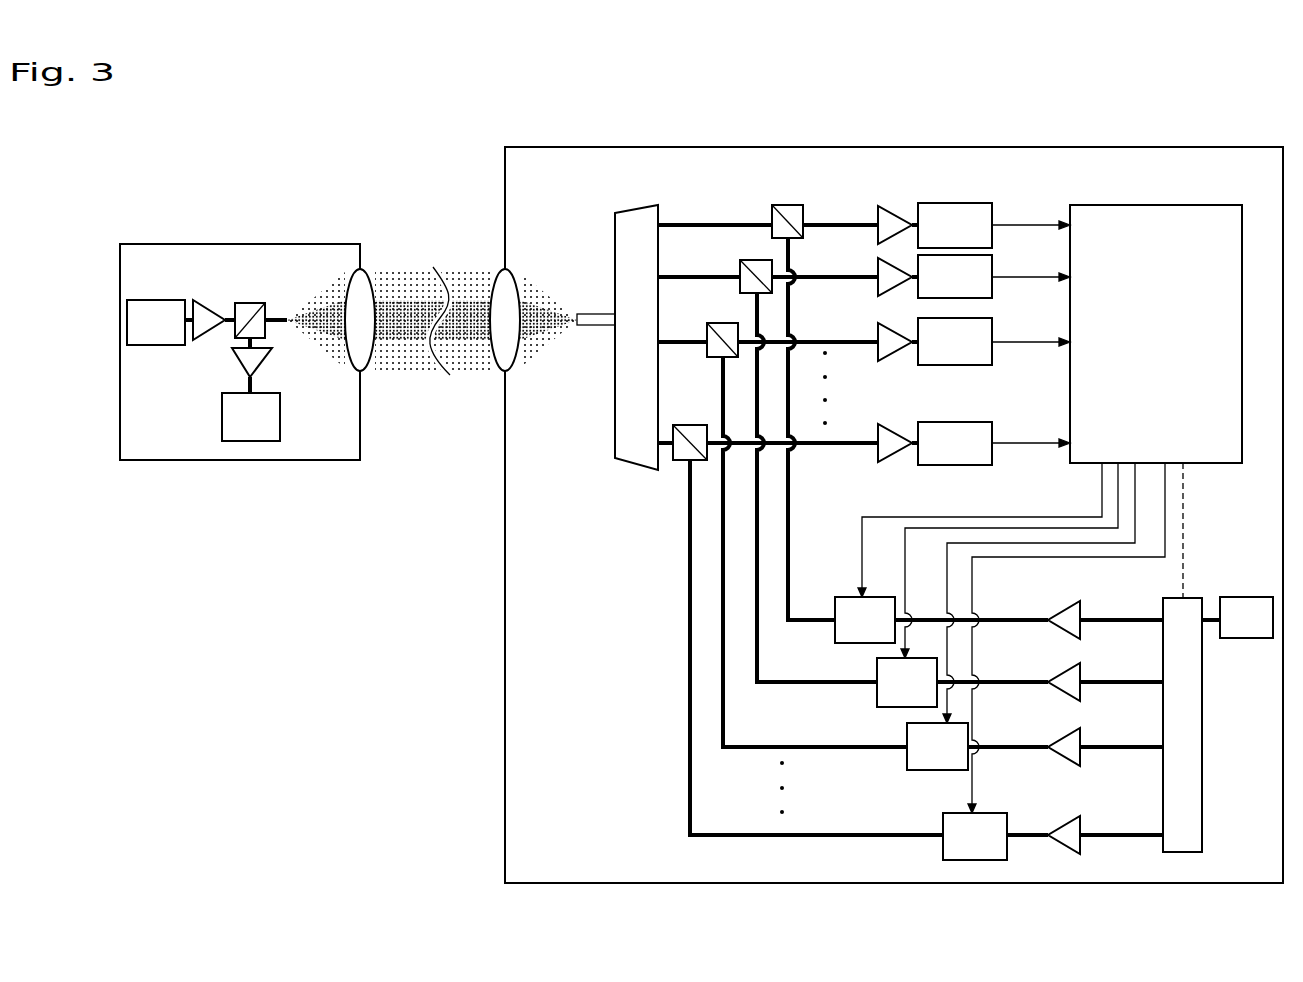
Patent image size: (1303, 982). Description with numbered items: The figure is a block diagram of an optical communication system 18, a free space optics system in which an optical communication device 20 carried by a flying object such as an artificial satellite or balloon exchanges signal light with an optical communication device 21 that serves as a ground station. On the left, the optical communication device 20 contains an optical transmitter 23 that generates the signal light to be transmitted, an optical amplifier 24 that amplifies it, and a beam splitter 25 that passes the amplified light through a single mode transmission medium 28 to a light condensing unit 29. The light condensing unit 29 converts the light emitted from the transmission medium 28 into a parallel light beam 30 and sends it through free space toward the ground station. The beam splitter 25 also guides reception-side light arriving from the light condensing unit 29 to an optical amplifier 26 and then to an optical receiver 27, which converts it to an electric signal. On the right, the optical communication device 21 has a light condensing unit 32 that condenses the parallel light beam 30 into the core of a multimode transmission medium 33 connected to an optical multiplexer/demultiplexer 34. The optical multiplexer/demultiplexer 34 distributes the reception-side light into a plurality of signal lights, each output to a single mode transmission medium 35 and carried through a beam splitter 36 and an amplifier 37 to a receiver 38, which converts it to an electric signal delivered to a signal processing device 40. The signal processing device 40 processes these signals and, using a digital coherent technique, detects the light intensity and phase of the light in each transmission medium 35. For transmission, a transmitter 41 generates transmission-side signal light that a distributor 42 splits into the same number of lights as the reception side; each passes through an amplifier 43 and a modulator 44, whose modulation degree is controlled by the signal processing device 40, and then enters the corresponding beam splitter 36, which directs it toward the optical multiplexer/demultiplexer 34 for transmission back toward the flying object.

The optical communication system 18 is at (674, 96).
The optical communication device 20 is at (308, 244).
The optical communication device 21 is at (1155, 147).
The optical transmitter 23 is at (158, 298).
The optical amplifier 24 is at (205, 304).
The beam splitter 25 is at (255, 302).
The optical amplifier 26 is at (235, 362).
The optical receiver 27 is at (220, 408).
The transmission medium 28 is at (280, 316).
The light condensing unit 29 is at (342, 350).
The parallel light beam 30 is at (457, 276).
The light condensing unit 32 is at (521, 345).
The transmission medium 33 is at (592, 310).
The optical multiplexer/demultiplexer 34 is at (630, 208).
The transmission medium 35 is at (671, 222).
The beam splitter 36 is at (773, 210).
The amplifier 37 is at (877, 215).
The receiver 38 is at (993, 220).
The signal processing device 40 is at (1162, 204).
The transmitter 41 is at (1238, 597).
The distributor 42 is at (1195, 597).
The amplifier 43 is at (1082, 612).
The modulator 44 is at (836, 606).